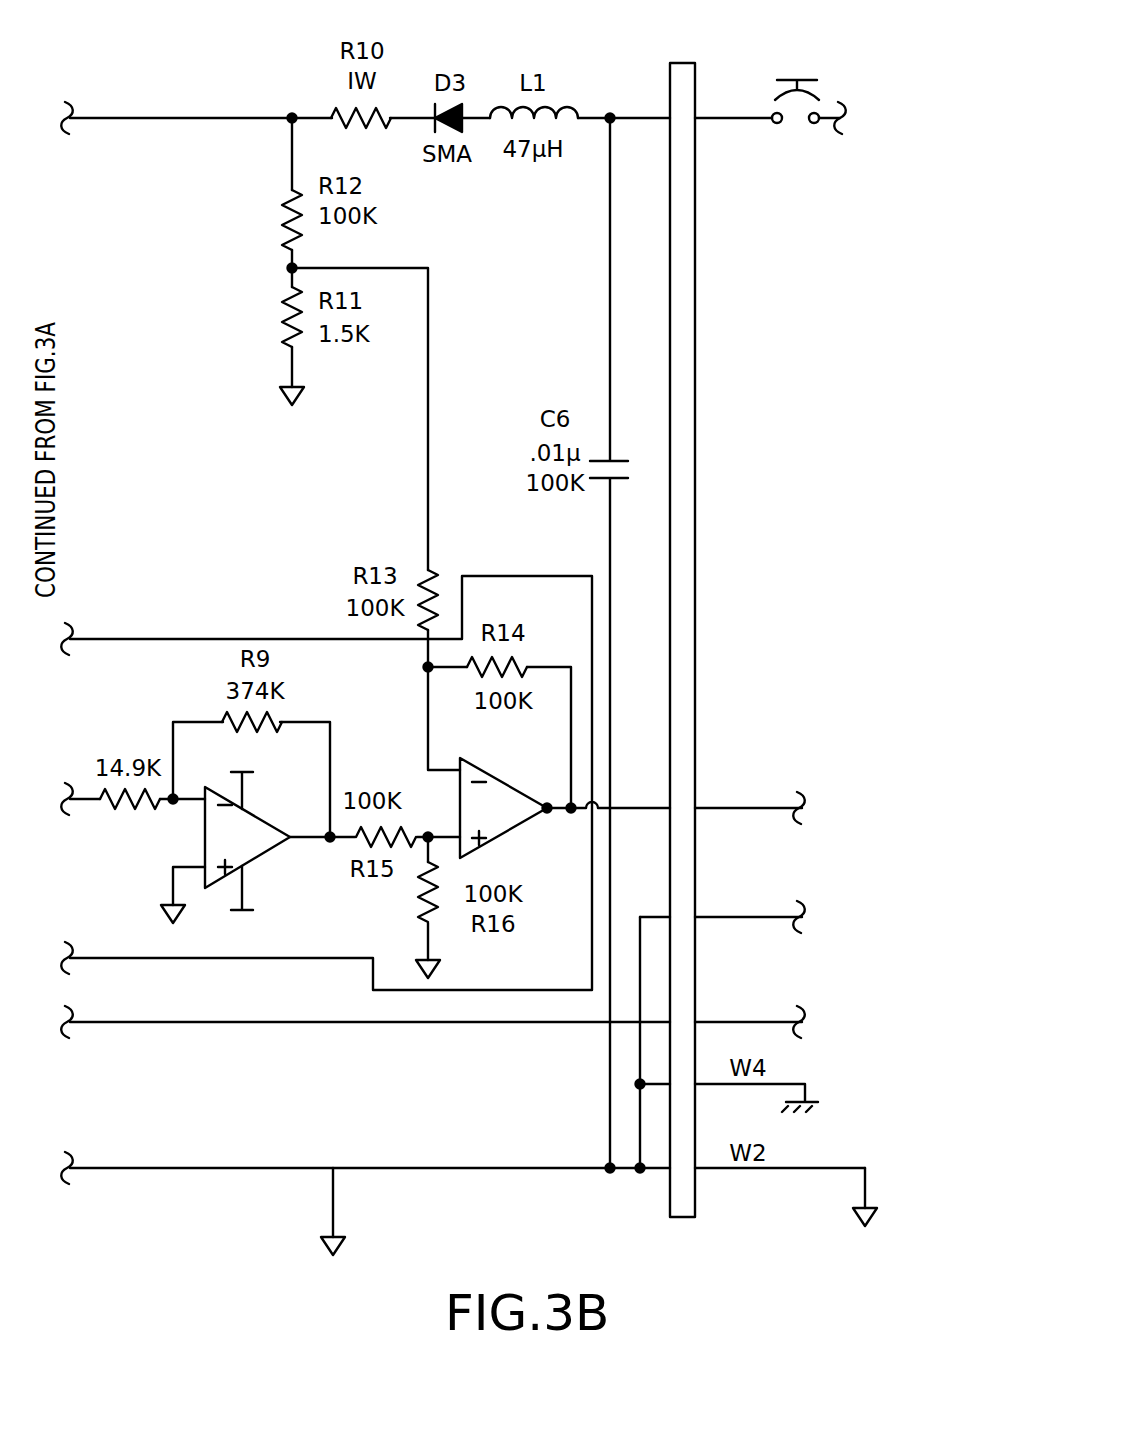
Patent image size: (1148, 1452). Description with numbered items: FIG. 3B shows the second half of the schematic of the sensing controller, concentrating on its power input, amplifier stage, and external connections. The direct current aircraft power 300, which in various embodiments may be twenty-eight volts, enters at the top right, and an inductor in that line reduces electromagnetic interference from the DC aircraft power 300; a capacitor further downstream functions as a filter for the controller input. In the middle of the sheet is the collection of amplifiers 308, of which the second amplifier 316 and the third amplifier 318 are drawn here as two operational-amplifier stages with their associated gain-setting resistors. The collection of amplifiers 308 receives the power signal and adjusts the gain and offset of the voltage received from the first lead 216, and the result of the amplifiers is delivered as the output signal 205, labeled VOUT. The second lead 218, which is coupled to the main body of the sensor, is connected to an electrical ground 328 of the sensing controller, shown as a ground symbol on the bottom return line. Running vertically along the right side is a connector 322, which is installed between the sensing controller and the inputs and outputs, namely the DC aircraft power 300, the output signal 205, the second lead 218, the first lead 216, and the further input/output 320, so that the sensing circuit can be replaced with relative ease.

The direct current aircraft power 300 is at (845, 126).
The connector 322 is at (695, 282).
The collection of amplifiers 308 is at (158, 640).
The second amplifier 316 is at (280, 845).
The third amplifier 318 is at (520, 825).
The output signal 205 is at (782, 803).
The second lead 218 is at (782, 913).
The first lead 216 is at (782, 1018).
The input/output 320 is at (865, 1193).
The electrical ground 328 is at (333, 1213).